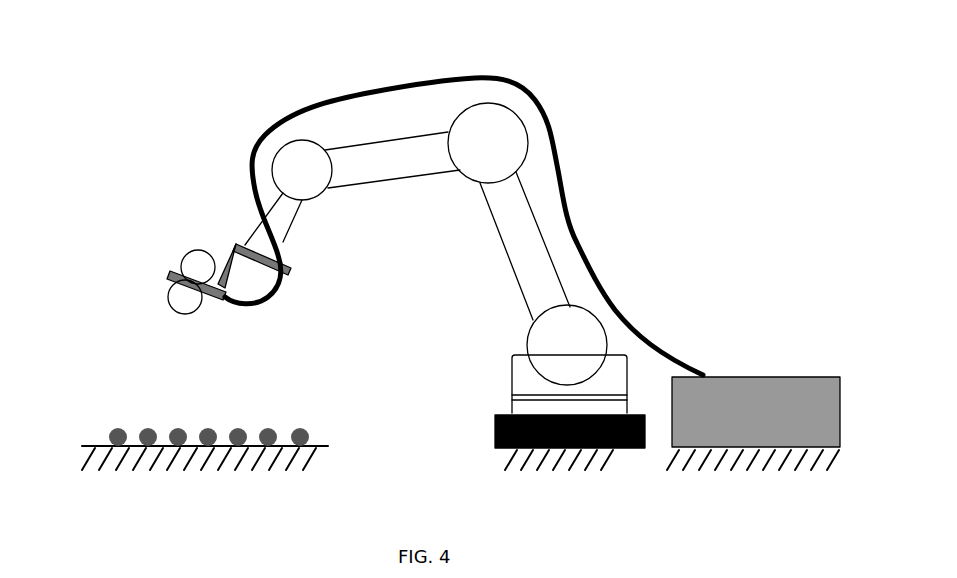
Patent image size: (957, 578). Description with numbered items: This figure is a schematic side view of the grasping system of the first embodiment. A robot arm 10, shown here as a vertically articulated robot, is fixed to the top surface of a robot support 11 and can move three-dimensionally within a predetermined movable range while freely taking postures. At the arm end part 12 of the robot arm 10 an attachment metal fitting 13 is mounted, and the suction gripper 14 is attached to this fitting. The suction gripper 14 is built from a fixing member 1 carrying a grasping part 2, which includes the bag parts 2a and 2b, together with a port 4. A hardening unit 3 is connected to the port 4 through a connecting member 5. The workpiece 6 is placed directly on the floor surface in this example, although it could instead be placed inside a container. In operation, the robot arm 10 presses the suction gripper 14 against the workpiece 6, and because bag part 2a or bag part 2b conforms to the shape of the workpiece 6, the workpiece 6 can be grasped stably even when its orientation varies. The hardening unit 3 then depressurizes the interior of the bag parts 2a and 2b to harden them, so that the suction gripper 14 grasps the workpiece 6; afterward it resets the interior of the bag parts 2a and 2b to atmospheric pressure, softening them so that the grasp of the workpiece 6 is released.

The fixing member 1 is at (175, 273).
The grasping part 2 is at (140, 298).
The bag part 2a is at (200, 250).
The bag part 2b is at (173, 311).
The hardening unit 3 is at (782, 376).
The port 4 is at (228, 301).
The connecting member 5 is at (604, 286).
The workpiece 6 is at (300, 432).
The robot arm 10 is at (403, 177).
The robot support 11 is at (494, 427).
The arm end part 12 is at (284, 245).
The attachment metal fitting 13 is at (245, 243).
The suction gripper 14 is at (157, 214).